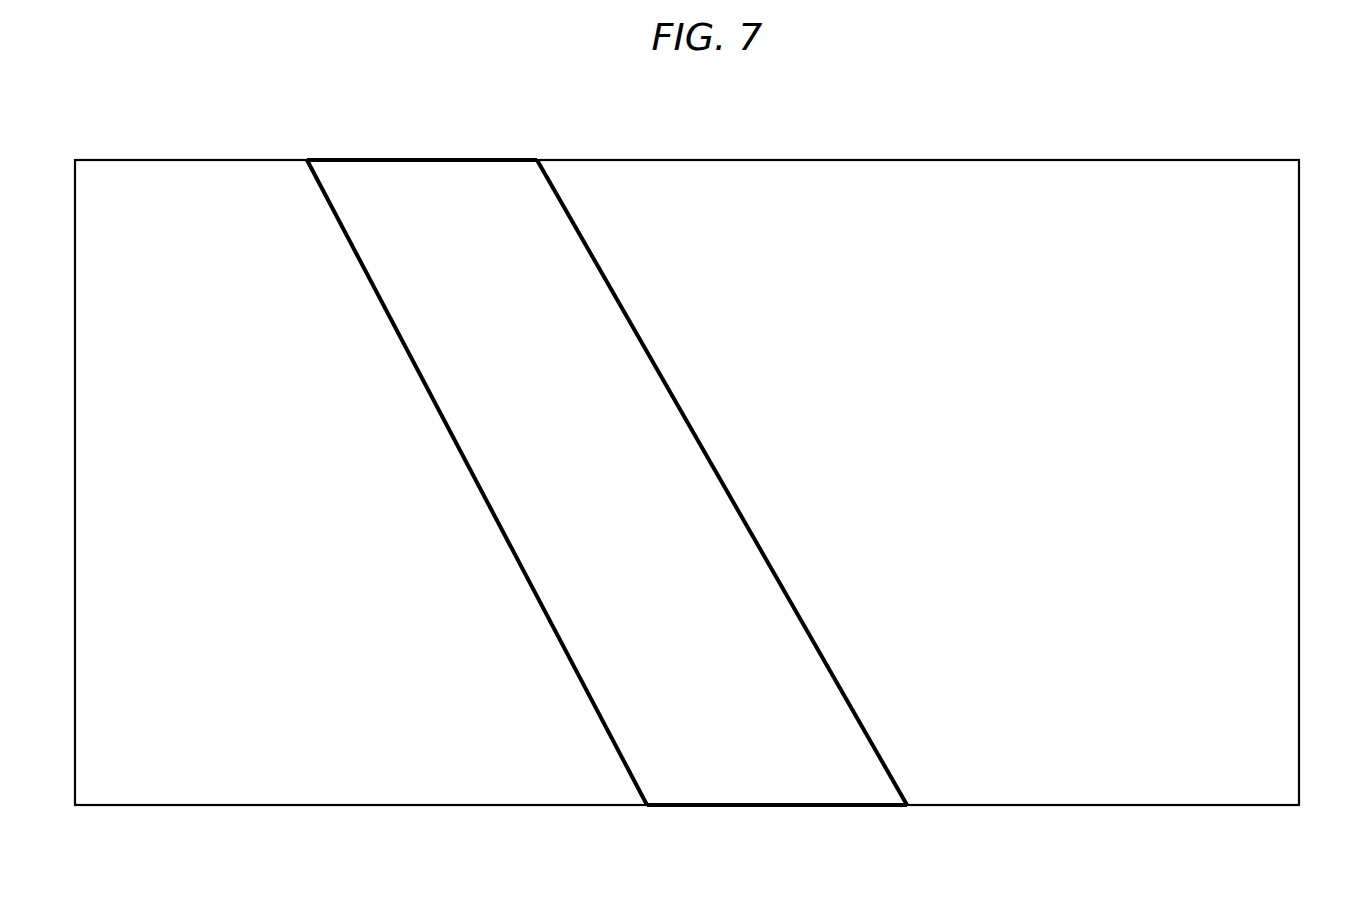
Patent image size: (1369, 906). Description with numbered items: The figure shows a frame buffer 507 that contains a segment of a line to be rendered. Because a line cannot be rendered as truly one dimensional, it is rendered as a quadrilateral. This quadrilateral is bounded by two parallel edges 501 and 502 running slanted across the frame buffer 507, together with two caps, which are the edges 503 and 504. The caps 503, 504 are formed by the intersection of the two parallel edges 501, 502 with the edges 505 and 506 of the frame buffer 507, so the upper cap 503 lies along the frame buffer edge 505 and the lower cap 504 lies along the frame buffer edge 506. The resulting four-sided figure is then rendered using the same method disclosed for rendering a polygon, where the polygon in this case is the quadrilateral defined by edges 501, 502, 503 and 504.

The parallel edge 501 is at (438, 412).
The parallel edge 502 is at (681, 402).
The cap edge 503 is at (416, 160).
The cap edge 504 is at (770, 806).
The frame buffer edge 505 is at (913, 160).
The frame buffer edge 506 is at (1112, 806).
The frame buffer 507 is at (1282, 539).